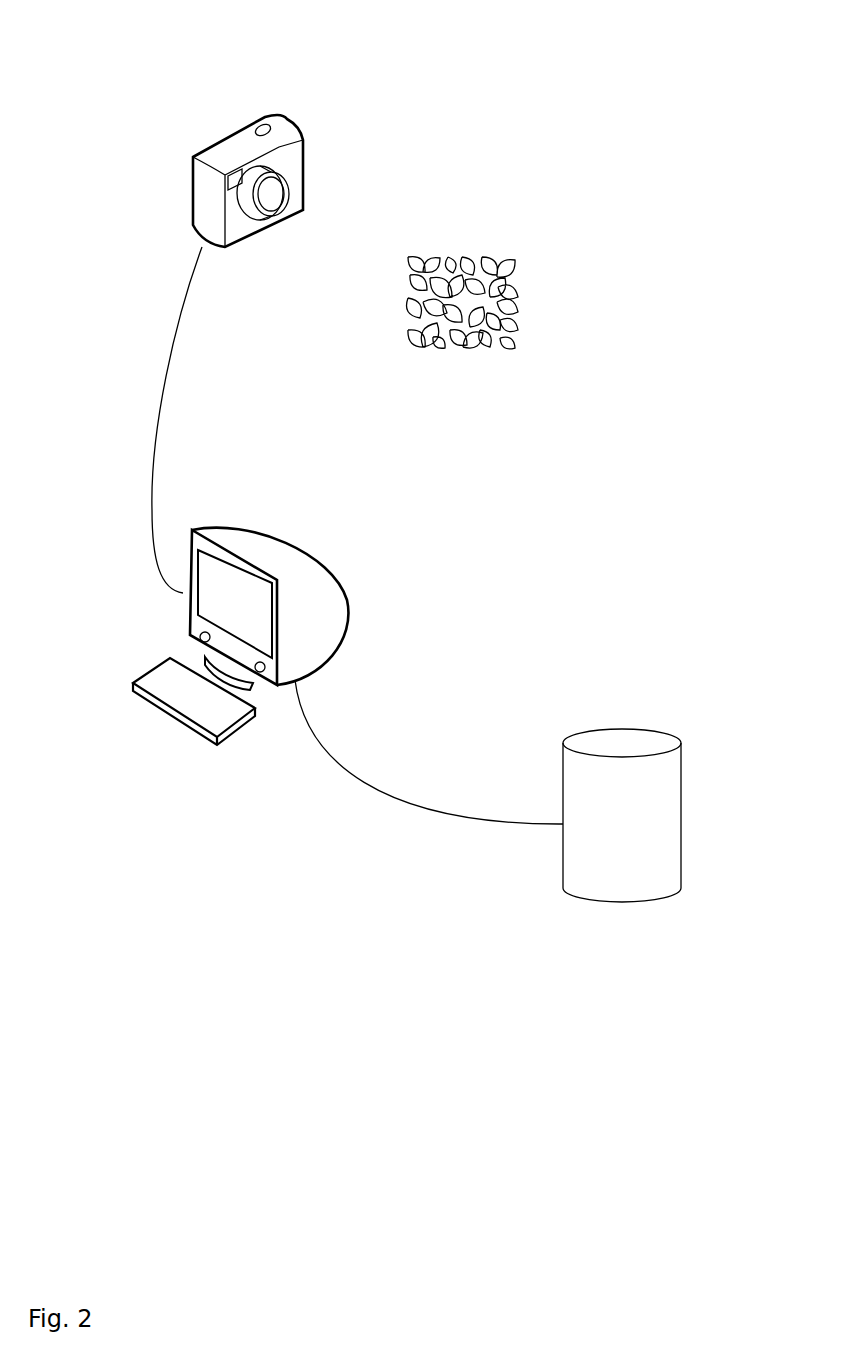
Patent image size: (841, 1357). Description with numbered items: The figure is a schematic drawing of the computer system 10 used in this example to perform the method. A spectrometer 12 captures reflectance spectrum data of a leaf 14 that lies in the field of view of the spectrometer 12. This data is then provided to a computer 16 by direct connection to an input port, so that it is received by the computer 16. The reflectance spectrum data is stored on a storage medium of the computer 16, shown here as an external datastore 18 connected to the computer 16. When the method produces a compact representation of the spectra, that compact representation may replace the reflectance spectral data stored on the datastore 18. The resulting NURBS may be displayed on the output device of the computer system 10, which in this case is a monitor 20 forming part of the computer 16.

The computer system 10 is at (574, 120).
The spectrometer 12 is at (213, 145).
The leaf 14 is at (495, 252).
The computer 16 is at (279, 483).
The external datastore 18 is at (665, 902).
The monitor 20 is at (217, 610).